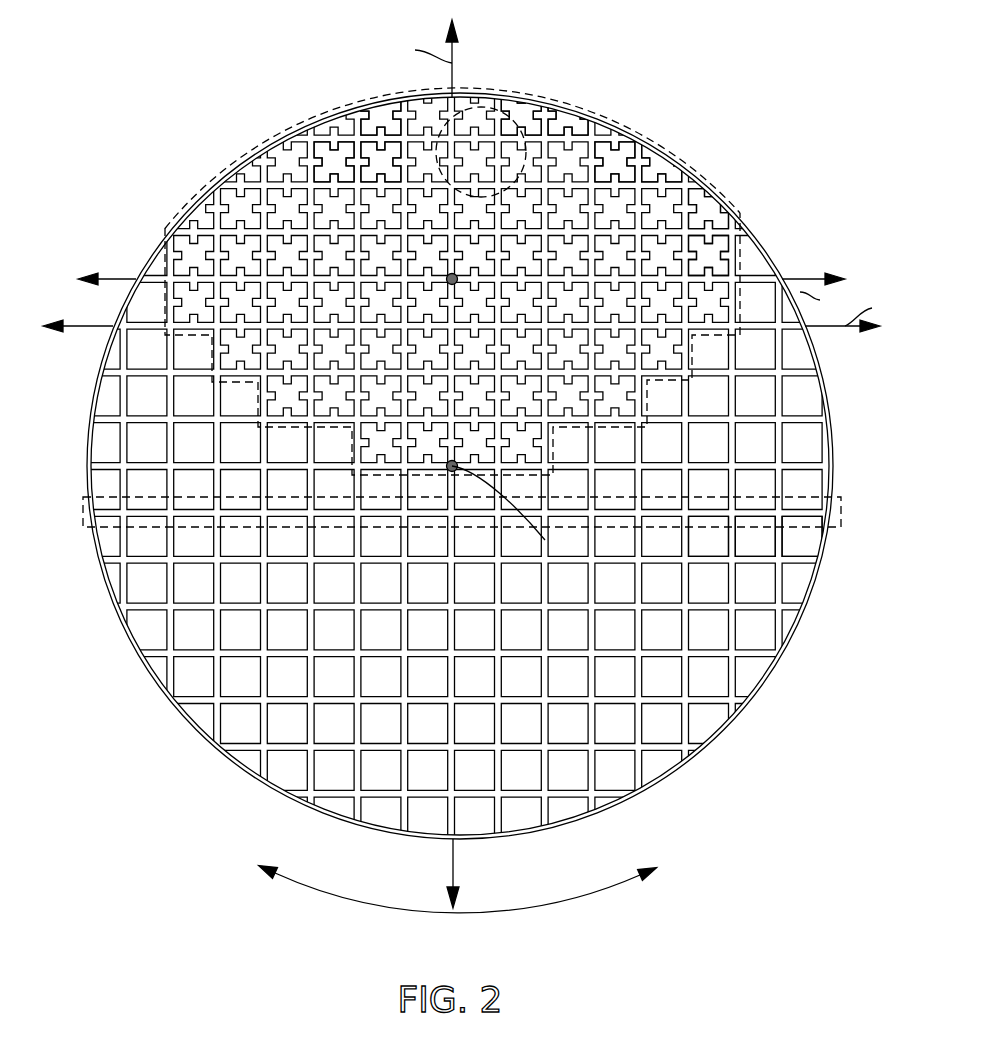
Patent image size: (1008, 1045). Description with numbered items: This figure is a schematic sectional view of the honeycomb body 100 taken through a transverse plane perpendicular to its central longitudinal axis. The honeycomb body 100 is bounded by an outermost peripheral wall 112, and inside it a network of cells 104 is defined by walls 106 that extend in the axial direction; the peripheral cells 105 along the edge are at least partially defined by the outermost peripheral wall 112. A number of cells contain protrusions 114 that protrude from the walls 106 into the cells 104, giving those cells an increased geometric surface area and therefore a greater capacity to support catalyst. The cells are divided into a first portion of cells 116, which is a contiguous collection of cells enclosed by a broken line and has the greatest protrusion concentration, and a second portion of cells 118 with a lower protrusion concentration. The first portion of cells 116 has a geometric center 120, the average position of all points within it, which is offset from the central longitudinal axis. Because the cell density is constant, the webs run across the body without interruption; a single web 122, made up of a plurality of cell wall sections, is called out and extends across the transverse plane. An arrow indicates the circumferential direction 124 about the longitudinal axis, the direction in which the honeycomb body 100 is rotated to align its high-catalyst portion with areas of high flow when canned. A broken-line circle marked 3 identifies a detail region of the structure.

The honeycomb body 100 is at (461, 488).
The cells 104 is at (337, 207).
The peripheral cells 105 is at (520, 110).
The walls 106 is at (640, 178).
The outermost peripheral wall 112 is at (763, 247).
The protrusions 114 is at (337, 163).
The first portion of cells 116 is at (222, 200).
The second portion of cells 118 is at (658, 722).
The geometric center 120 is at (452, 279).
The web 122 is at (787, 497).
The circumferential direction 124 is at (565, 905).
The detail region of FIG. 3 is at (490, 108).